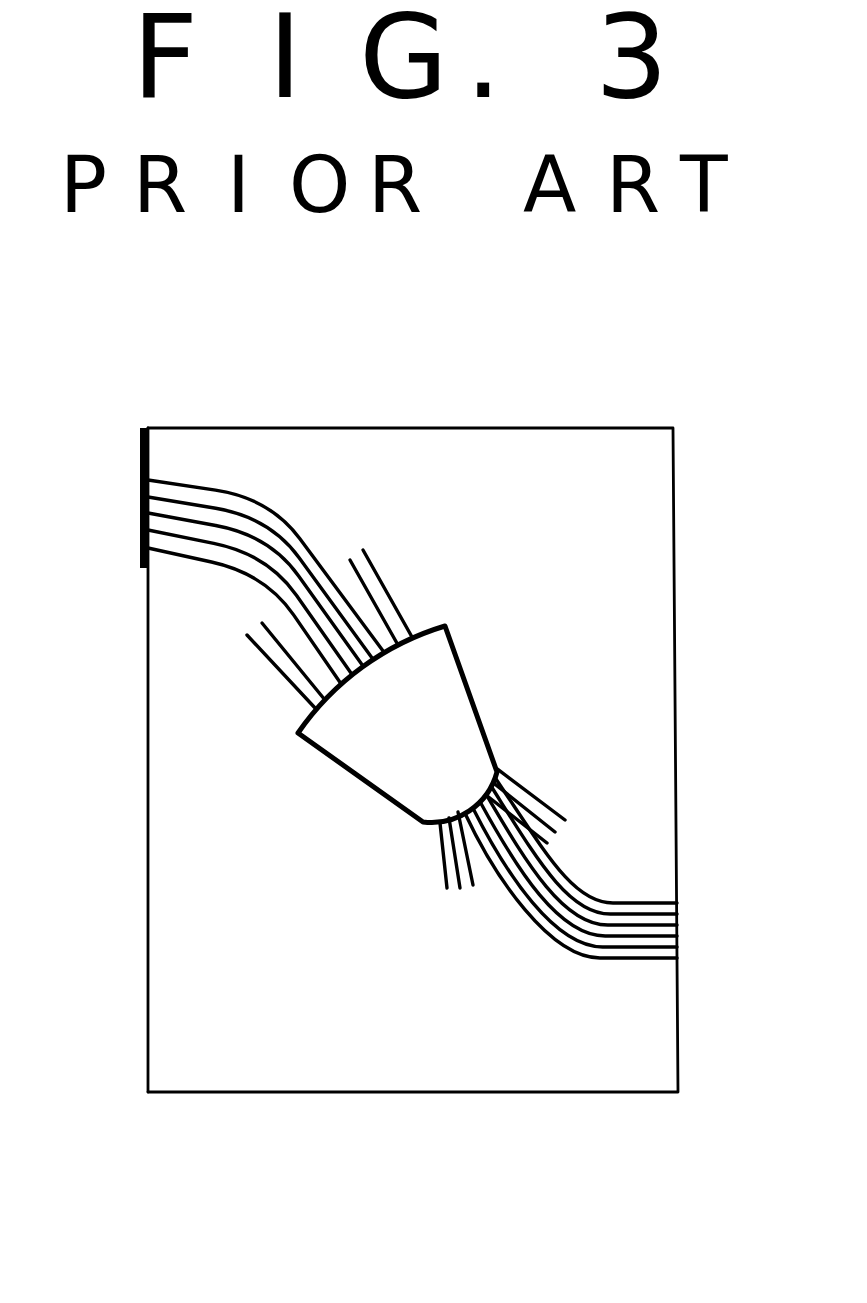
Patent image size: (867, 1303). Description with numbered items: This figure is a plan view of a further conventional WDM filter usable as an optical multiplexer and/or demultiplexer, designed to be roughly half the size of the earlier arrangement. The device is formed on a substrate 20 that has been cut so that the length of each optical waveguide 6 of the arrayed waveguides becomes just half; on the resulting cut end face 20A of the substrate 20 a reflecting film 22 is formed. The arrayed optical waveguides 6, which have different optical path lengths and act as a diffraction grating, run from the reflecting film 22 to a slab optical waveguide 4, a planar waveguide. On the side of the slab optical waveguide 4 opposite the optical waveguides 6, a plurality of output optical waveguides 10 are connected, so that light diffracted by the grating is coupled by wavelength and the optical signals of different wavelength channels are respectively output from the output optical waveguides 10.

The slab optical waveguide 4 is at (388, 786).
The optical waveguides 6 is at (218, 574).
The output optical waveguides 10 is at (621, 972).
The substrate 20 is at (310, 1087).
The cut end face 20A is at (148, 962).
The reflecting film 22 is at (144, 462).